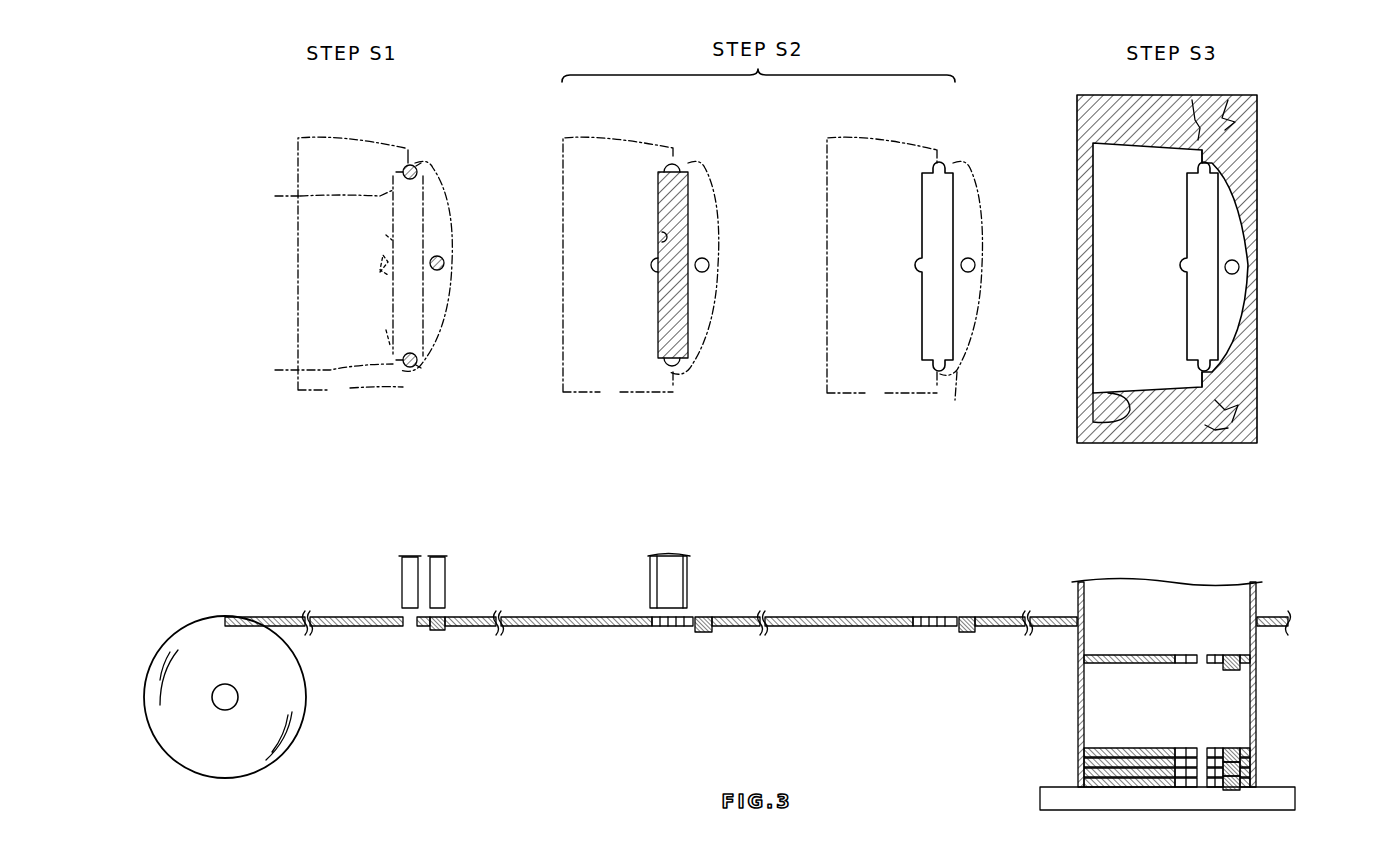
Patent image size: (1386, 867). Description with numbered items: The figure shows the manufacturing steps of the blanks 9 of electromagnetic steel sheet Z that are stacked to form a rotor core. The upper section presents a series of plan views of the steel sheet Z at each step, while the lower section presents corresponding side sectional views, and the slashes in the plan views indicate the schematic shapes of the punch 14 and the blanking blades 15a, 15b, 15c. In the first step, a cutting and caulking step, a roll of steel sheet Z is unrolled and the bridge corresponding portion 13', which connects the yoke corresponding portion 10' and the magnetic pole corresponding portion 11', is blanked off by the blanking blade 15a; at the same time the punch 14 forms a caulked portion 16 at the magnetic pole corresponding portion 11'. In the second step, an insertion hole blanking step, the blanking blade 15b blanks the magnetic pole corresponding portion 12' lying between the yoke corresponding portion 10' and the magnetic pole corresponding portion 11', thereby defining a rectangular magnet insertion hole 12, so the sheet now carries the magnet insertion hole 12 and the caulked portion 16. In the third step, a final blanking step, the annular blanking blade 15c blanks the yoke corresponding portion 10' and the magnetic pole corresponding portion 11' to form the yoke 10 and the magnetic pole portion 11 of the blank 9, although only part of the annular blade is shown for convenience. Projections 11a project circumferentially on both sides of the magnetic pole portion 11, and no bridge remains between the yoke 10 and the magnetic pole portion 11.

The steel sheet Z is at (346, 377).
The blanking blade 15a is at (417, 166).
The bridge corresponding portion 13' is at (318, 286).
The magnetic pole corresponding portion 11' is at (691, 296).
The punch 14 is at (444, 266).
The yoke corresponding portion 10' is at (540, 285).
The magnetic pole corresponding portion 12' is at (437, 299).
The blanking blade 15b is at (658, 198).
The magnet insertion hole 12 is at (969, 473).
The caulked portion 16 is at (709, 270).
The blank 9 is at (1094, 420).
The annular blanking blade 15c is at (1245, 405).
The yoke 10 is at (1106, 571).
The magnetic pole portion 11 is at (1291, 495).
The projection 11a is at (1245, 160).